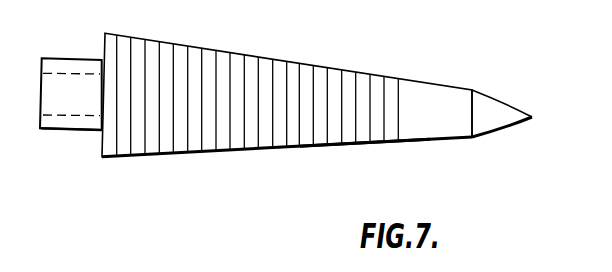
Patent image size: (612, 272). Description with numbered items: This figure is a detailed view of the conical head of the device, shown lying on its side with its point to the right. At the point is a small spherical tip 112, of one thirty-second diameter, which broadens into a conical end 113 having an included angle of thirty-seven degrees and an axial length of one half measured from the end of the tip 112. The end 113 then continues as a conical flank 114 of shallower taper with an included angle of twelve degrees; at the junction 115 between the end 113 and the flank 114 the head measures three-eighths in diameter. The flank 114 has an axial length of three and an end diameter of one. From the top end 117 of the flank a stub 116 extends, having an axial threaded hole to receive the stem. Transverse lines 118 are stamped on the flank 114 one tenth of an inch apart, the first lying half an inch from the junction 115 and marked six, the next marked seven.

The spherical tip 112 is at (532, 117).
The conical end 113 is at (517, 87).
The conical flank 114 is at (328, 146).
The junction 115 is at (470, 138).
The stub 116 is at (77, 131).
The top end 117 is at (102, 157).
The transverse lines 118 is at (272, 148).